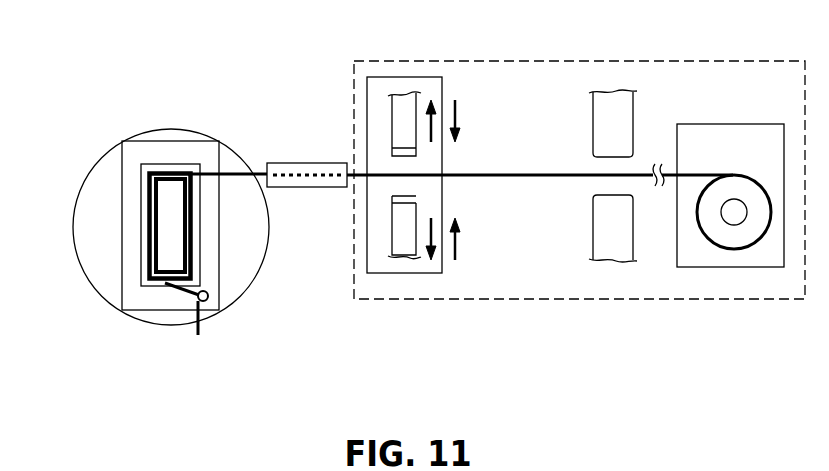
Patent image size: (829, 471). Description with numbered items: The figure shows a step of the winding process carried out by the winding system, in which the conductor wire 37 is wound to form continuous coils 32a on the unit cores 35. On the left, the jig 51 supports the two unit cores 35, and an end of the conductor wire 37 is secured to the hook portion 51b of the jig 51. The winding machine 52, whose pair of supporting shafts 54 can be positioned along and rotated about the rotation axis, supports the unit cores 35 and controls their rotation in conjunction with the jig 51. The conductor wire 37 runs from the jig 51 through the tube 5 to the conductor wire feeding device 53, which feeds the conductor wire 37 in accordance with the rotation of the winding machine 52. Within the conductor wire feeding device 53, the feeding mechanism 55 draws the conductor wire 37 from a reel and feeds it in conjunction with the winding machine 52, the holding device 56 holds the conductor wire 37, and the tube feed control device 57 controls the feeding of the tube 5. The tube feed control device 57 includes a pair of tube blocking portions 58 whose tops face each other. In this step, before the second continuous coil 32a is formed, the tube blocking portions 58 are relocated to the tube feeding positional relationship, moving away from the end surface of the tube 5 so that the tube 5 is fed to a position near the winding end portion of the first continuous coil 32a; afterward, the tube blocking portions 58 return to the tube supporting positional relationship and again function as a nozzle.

The tube 5 is at (315, 188).
The continuous coil 32a is at (150, 232).
The unit core 35 is at (168, 168).
The conductor wire 37 is at (539, 178).
The jig 51 is at (130, 168).
The hook portion 51b is at (200, 302).
The winding machine 52 is at (139, 234).
The conductor wire feeding device 53 is at (462, 300).
The supporting shaft 54 is at (108, 290).
The feeding mechanism 55 is at (736, 253).
The holding device 56 is at (611, 120).
The tube feed control device 57 is at (381, 138).
The tube blocking portion 58 is at (398, 120).